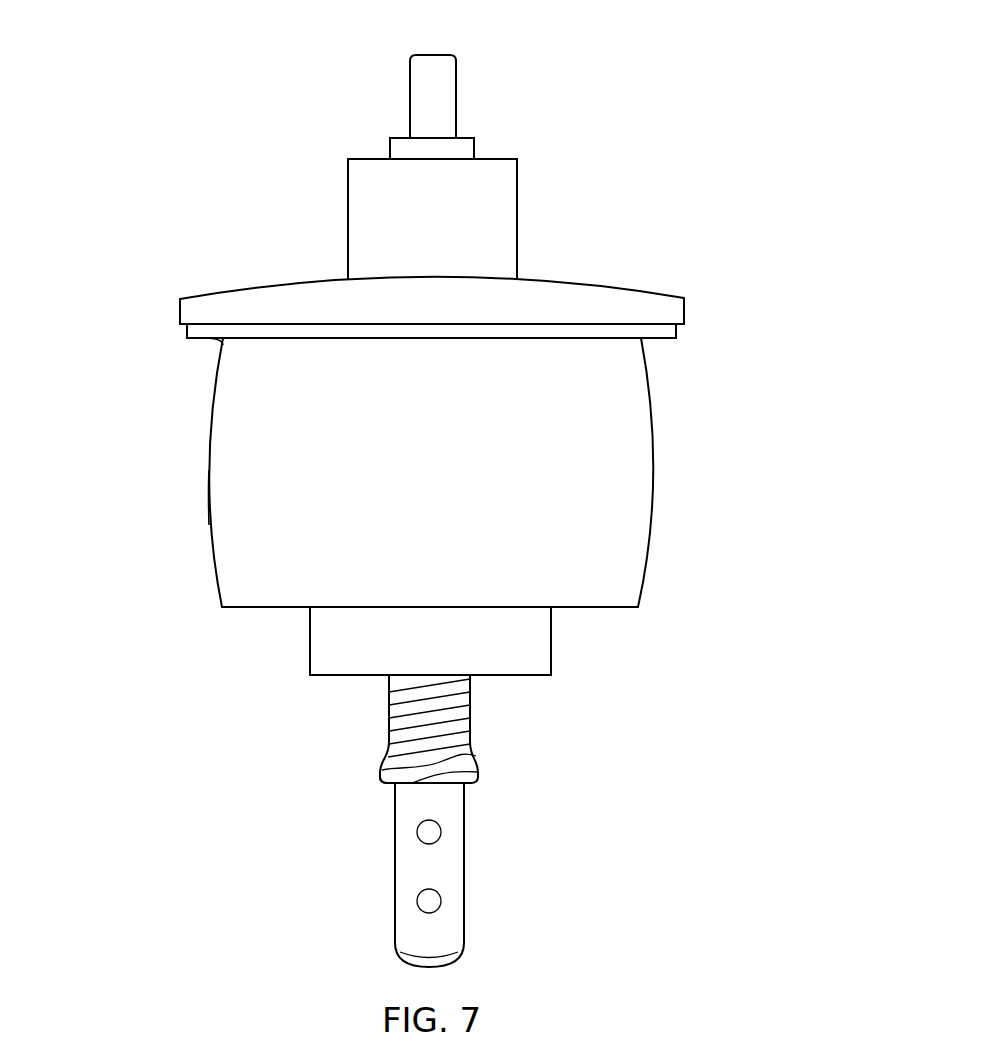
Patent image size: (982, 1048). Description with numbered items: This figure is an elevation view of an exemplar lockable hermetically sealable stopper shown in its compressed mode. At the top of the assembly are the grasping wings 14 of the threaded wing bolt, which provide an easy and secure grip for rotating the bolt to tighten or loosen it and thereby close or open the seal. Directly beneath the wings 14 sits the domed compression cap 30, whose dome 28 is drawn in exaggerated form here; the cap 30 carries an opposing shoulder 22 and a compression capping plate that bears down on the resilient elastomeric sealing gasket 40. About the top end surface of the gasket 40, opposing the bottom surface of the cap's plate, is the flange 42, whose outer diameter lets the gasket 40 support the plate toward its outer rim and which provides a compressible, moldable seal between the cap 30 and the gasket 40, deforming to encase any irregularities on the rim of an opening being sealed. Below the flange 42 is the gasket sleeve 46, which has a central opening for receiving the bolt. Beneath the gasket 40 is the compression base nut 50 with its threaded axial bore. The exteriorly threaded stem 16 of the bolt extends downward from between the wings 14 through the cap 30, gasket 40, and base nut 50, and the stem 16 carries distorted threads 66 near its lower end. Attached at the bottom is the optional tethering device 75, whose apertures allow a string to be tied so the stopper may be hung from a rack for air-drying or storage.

The wings 14 is at (456, 80).
The shoulder 22 is at (517, 200).
The dome 28 is at (248, 286).
The domed compression cap 30 is at (702, 315).
The sealing gasket 40 is at (668, 470).
The flange 42 is at (207, 340).
The sleeve 46 is at (209, 523).
The compression base nut 50 is at (562, 645).
The stem section 16 is at (470, 725).
The distorted threads 66 is at (382, 770).
The optional tethering device 75 is at (464, 877).